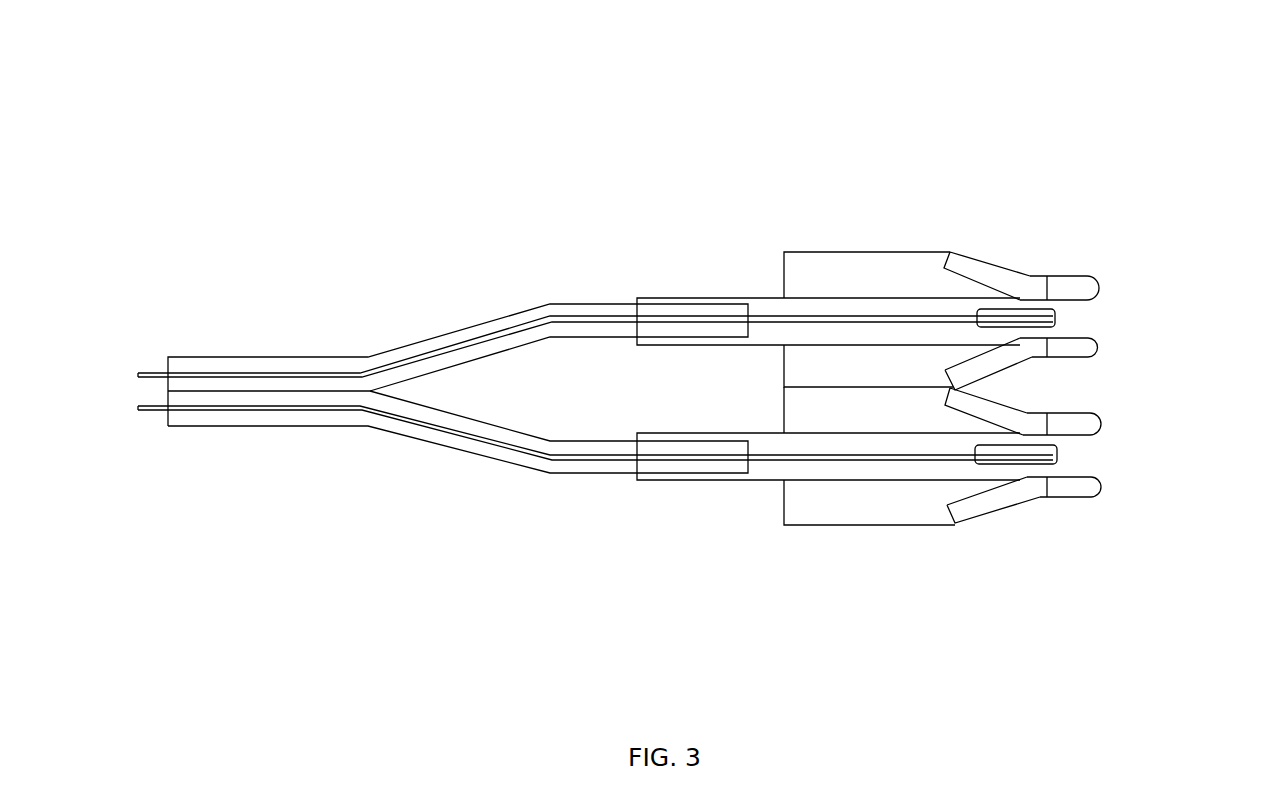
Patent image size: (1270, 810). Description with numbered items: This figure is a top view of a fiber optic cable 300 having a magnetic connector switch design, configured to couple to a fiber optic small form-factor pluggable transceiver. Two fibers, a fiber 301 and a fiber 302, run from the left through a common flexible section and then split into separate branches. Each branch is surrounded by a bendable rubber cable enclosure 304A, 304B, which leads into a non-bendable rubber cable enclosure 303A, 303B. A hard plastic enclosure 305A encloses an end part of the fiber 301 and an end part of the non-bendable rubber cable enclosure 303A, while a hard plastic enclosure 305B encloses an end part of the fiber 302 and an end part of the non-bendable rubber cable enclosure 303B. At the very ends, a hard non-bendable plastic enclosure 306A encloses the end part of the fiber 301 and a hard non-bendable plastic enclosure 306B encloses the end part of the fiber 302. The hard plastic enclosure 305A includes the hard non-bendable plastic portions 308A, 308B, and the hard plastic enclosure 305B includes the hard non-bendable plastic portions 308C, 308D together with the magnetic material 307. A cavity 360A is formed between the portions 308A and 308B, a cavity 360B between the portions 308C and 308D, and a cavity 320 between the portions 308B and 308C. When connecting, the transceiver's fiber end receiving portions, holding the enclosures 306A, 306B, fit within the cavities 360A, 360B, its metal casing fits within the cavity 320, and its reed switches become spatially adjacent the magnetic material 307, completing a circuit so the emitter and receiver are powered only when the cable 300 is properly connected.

The fiber optic cable 300 is at (860, 99).
The fiber 301 is at (153, 360).
The fiber 302 is at (153, 413).
The non-bendable rubber cable enclosure 303A is at (764, 297).
The non-bendable rubber cable enclosure 303B is at (760, 484).
The bendable rubber cable enclosure 304A is at (400, 342).
The bendable rubber cable enclosure 304B is at (412, 438).
The hard plastic enclosure 305A is at (828, 249).
The hard plastic enclosure 305B is at (838, 529).
The hard non-bendable plastic enclosure 306A is at (1064, 313).
The hard non-bendable plastic enclosure 306B is at (1066, 456).
The magnetic material 307 is at (976, 252).
The hard non-bendable plastic portion 308A is at (1073, 275).
The hard non-bendable plastic portion 308B is at (1088, 363).
The hard non-bendable plastic portion 308C is at (1099, 438).
The hard non-bendable plastic portion 308D is at (1066, 504).
The cavity 320 is at (1101, 405).
The cavity 360A is at (1098, 315).
The cavity 360B is at (1099, 472).